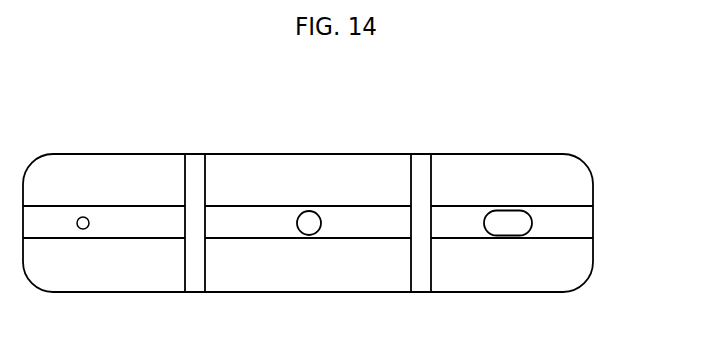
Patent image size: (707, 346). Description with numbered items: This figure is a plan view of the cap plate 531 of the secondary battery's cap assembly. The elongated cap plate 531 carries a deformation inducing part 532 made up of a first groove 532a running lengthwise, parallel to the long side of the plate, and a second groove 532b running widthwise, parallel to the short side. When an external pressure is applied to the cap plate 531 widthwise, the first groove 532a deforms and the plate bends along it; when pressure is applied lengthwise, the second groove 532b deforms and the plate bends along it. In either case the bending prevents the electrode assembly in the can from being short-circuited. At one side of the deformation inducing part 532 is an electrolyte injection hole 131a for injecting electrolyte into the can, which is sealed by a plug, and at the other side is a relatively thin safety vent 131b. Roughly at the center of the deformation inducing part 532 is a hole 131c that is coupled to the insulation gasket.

The cap plate 531 is at (333, 177).
The deformation inducing part 532 is at (308, 177).
The first groove 532a is at (245, 210).
The second groove 532b is at (205, 170).
The electrolyte injection hole 131a is at (83, 216).
The safety vent 131b is at (510, 220).
The hole 131c is at (309, 218).